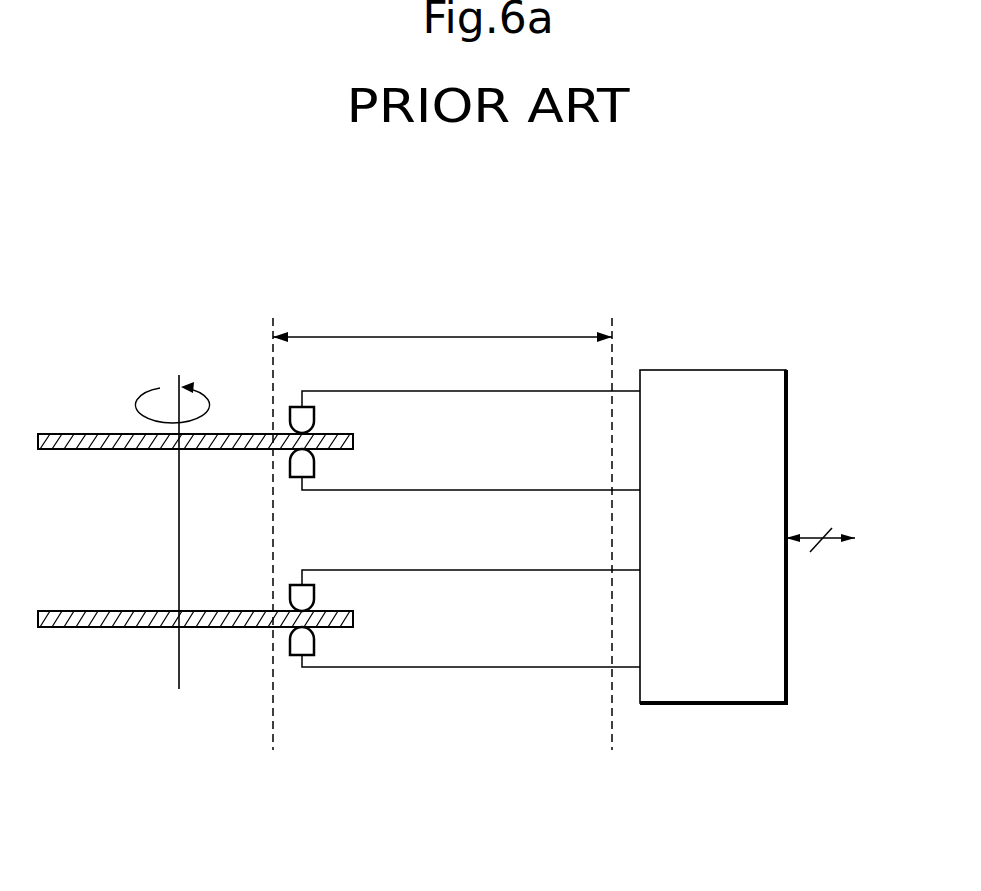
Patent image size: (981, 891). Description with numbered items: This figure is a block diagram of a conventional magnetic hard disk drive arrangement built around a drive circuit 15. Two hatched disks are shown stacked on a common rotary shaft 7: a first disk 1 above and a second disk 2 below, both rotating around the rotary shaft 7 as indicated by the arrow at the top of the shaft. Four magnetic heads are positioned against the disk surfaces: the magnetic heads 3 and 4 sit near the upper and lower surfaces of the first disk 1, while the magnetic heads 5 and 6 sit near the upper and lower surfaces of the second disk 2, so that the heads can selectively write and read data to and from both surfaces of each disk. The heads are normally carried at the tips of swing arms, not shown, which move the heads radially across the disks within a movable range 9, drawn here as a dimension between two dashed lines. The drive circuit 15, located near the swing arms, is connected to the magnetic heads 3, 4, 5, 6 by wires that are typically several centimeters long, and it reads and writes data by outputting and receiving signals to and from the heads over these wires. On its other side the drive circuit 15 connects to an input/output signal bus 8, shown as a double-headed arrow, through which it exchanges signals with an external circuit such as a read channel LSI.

The first disk 1 is at (57, 436).
The second disk 2 is at (57, 614).
The magnetic head 3 is at (290, 421).
The magnetic head 4 is at (290, 466).
The magnetic head 5 is at (290, 602).
The magnetic head 6 is at (290, 647).
The rotary shaft 7 is at (178, 668).
The input/output signal bus 8 is at (822, 552).
The movable range 9 is at (330, 335).
The drive circuit 15 is at (715, 704).